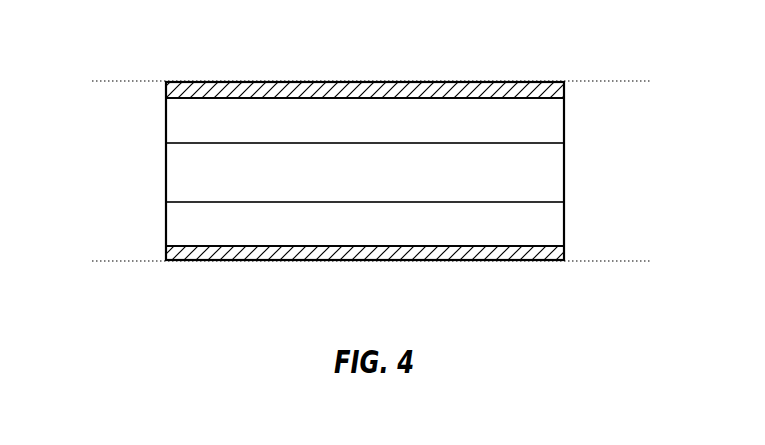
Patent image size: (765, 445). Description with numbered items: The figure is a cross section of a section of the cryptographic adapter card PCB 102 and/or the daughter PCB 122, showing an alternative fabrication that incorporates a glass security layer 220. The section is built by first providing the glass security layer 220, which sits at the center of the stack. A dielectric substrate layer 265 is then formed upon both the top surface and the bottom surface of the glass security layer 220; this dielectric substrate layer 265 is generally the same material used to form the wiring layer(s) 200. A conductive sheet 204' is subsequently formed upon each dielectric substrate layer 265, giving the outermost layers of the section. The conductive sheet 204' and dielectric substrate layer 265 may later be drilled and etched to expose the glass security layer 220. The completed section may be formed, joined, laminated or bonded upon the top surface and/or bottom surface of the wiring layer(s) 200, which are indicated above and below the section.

The cryptographic adapter card PCB 102 is at (44, 56).
The daughter PCB 122 is at (112, 56).
The wiring layer 200 is at (375, 53).
The conductive sheet 204' is at (395, 175).
The glass security layer 220 is at (541, 169).
The dielectric substrate layer 265 is at (180, 117).